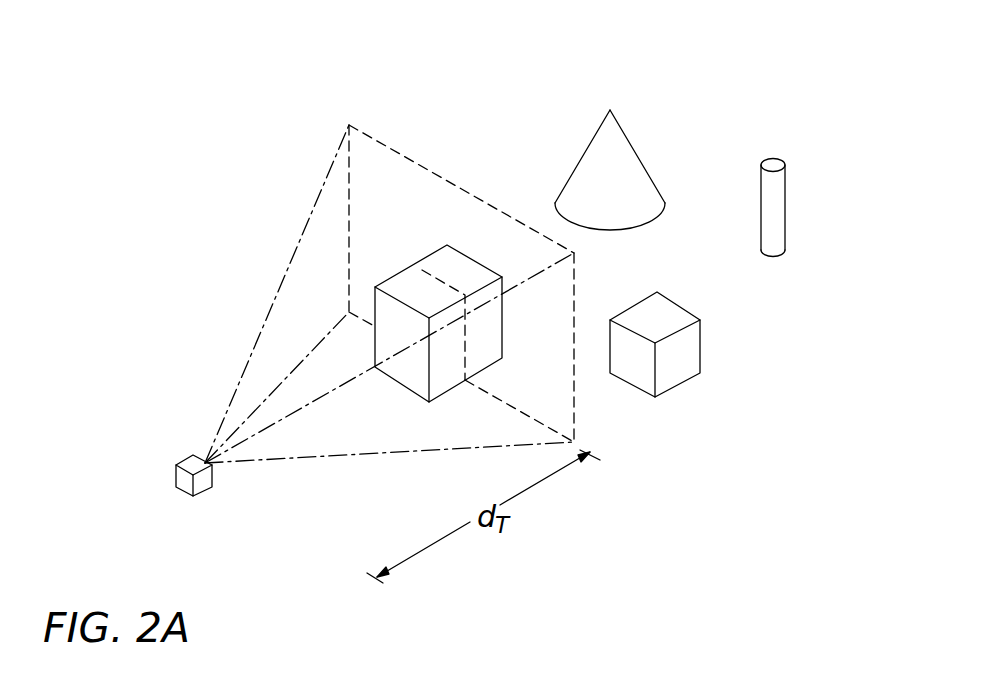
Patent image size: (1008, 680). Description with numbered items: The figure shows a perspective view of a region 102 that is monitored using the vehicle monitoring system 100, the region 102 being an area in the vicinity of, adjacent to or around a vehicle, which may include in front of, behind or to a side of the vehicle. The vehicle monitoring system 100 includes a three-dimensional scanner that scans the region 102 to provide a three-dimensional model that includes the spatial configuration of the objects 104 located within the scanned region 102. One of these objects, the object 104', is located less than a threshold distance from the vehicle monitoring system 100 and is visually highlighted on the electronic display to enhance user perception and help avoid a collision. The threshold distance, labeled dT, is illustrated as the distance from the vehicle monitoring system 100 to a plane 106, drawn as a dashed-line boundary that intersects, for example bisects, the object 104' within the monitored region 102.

The vehicle monitoring system 100 is at (192, 460).
The region 102 is at (743, 47).
The objects 104 is at (717, 253).
The object 104' is at (340, 279).
The plane 106 is at (430, 162).